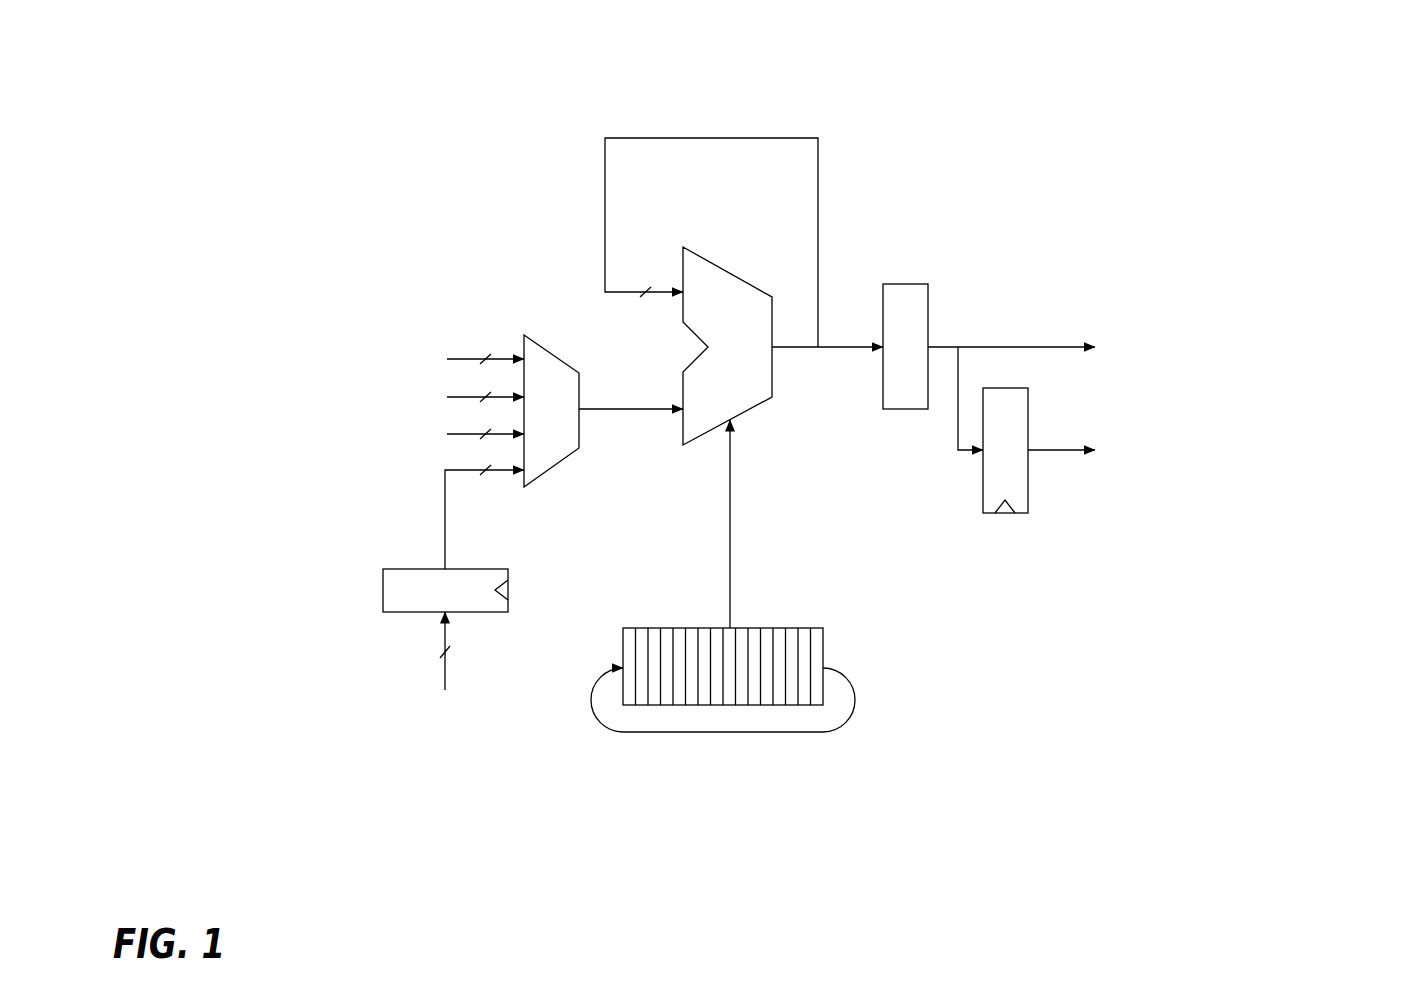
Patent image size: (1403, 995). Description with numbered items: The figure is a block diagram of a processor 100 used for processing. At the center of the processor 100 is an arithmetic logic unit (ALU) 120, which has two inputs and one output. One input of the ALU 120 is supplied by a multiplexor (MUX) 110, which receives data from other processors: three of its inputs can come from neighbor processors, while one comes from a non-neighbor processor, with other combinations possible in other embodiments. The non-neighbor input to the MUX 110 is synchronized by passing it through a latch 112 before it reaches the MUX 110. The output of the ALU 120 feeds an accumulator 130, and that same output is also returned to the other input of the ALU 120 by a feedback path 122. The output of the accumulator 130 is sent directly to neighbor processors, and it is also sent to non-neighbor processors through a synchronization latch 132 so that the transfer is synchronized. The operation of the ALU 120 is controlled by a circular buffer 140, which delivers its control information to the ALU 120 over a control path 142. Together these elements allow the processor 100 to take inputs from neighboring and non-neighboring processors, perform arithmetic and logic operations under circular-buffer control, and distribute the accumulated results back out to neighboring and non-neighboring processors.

The processor 100 is at (1258, 758).
The multiplexor 110 is at (557, 357).
The latch 112 is at (383, 590).
The arithmetic logic unit 120 is at (735, 273).
The feedback path 122 is at (708, 138).
The accumulator 130 is at (903, 284).
The synchronization latch 132 is at (1030, 487).
The circular buffer 140 is at (823, 650).
The control path 142 is at (730, 562).